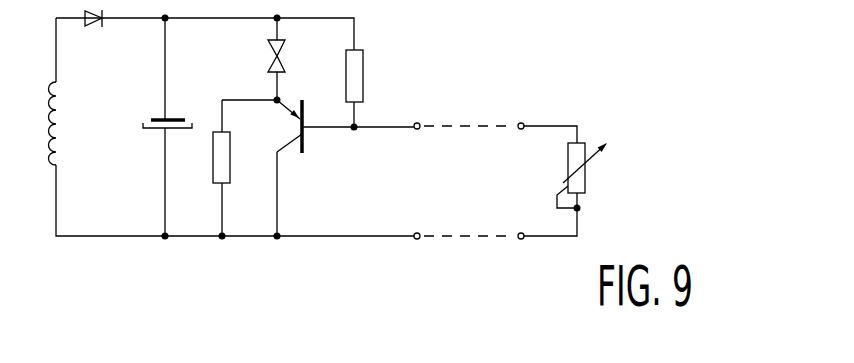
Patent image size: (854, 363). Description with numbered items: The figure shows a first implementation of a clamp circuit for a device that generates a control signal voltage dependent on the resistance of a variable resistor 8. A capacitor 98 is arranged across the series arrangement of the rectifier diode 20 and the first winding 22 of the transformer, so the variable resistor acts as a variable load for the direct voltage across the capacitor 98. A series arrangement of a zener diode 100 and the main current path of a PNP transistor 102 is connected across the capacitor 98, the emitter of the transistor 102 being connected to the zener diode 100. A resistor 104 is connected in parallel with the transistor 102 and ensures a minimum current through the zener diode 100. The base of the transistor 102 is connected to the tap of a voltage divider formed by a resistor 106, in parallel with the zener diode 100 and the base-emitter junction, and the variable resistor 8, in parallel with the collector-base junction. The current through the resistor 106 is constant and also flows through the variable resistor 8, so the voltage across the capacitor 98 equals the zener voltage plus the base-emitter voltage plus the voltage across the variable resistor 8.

The variable resistor 8 is at (574, 159).
The rectifier diode 20 is at (95, 28).
The first winding 22 is at (60, 128).
The capacitor 98 is at (190, 121).
The zener diode 100 is at (281, 58).
The PNP transistor 102 is at (304, 140).
The resistor 104 is at (222, 160).
The resistor 106 is at (362, 60).